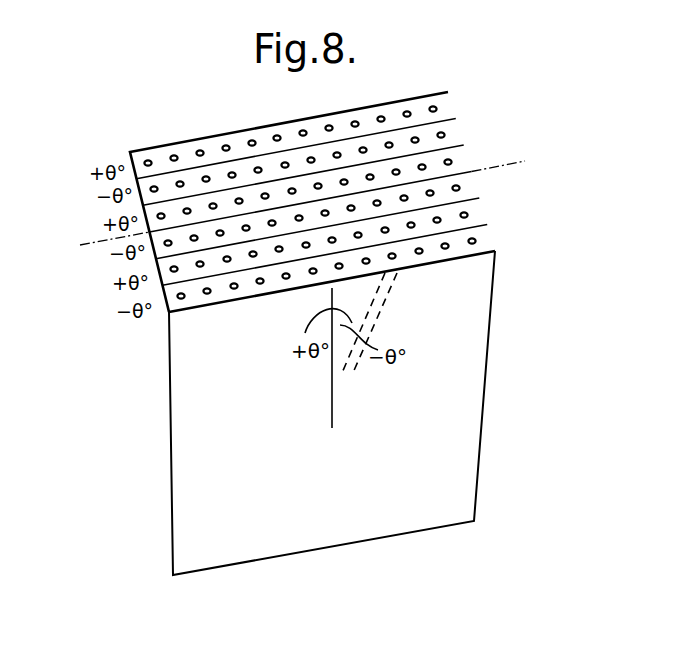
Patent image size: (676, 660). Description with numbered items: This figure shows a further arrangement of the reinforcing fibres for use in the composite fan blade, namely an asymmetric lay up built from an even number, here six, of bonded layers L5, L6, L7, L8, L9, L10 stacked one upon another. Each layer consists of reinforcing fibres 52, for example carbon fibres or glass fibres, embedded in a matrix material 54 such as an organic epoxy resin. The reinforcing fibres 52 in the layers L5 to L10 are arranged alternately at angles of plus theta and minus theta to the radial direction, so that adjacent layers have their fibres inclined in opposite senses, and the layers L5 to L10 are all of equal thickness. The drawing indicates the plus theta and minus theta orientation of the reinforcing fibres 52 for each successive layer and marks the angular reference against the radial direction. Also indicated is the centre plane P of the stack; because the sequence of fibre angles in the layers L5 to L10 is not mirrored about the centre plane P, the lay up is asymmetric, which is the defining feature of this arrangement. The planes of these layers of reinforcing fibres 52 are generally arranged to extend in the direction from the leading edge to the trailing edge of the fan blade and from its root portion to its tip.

The reinforcing fibres 52 is at (402, 193).
The matrix material 54 is at (148, 201).
The bonded layer L10 is at (452, 108).
The bonded layer L9 is at (462, 131).
The bonded layer L8 is at (465, 152).
The bonded layer L7 is at (472, 185).
The bonded layer L6 is at (483, 208).
The bonded layer L5 is at (492, 237).
The centre plane P is at (88, 248).